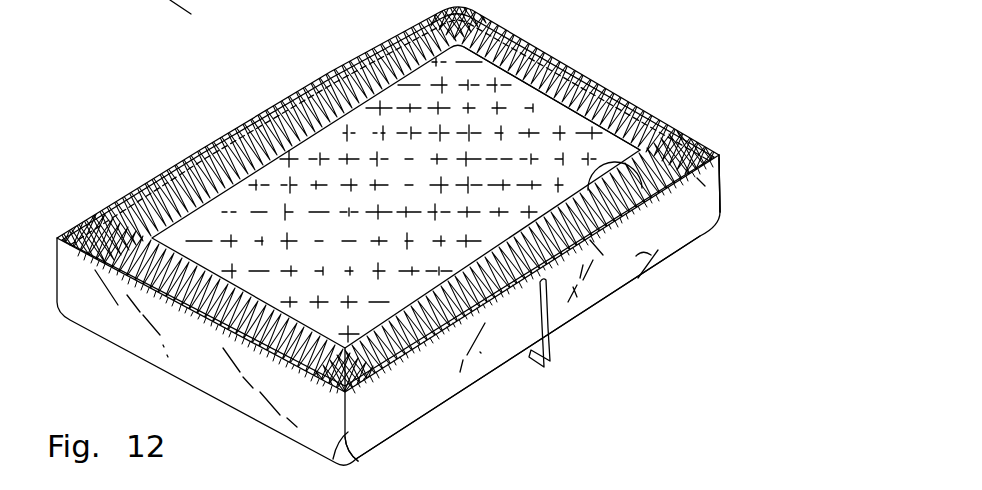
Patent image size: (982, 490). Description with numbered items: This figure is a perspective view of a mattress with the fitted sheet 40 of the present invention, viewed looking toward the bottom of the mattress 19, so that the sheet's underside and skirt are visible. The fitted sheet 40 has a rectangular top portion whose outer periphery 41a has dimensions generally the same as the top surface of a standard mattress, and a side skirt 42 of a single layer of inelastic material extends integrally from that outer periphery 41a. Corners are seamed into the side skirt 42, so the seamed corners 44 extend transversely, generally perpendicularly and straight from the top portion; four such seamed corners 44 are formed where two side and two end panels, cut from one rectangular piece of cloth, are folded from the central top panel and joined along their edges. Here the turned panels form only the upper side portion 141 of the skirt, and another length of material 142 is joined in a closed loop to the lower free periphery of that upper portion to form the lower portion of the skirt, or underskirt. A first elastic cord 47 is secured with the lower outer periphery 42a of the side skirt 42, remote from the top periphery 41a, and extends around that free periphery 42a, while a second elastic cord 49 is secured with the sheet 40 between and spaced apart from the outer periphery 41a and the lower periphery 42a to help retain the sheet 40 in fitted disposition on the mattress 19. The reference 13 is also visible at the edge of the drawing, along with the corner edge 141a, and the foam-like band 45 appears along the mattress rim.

The cover member 13 is at (180, 5).
The mattress 19 is at (436, 201).
The fitted sheet 40 is at (480, 360).
The outer periphery of the top portion 41a is at (447, 408).
The side skirt 42 is at (547, 326).
The lower outer periphery of the side skirt 42a is at (642, 192).
The seamed corners 44 is at (363, 460).
The foam seal band 45 is at (546, 48).
The first elastic cord 47 is at (193, 150).
The second elastic cord 49 is at (702, 182).
The upper side portion 141 is at (646, 259).
The corner edge 141a is at (720, 153).
The material 142 is at (670, 152).